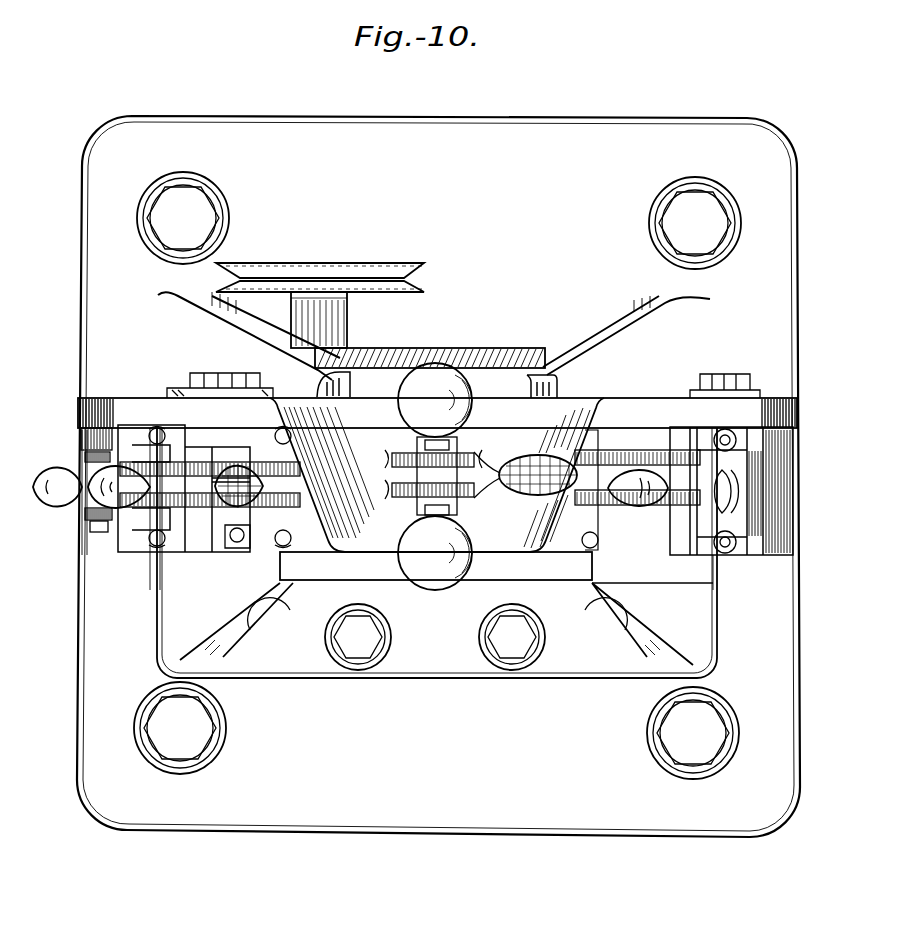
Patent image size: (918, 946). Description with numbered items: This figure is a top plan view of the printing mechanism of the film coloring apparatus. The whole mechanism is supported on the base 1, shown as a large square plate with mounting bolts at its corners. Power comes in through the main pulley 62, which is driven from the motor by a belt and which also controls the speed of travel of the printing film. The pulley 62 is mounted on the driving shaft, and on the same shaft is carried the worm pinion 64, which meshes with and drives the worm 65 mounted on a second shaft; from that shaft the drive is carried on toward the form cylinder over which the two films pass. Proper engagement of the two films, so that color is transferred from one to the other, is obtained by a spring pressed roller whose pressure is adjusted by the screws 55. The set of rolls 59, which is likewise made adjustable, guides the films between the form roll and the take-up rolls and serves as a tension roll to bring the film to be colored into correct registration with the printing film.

The base 1 is at (275, 808).
The screws 55 is at (437, 385).
The set of rolls 59 is at (213, 523).
The main pulley 62 is at (368, 270).
The worm pinion 64 is at (332, 345).
The worm 65 is at (488, 348).